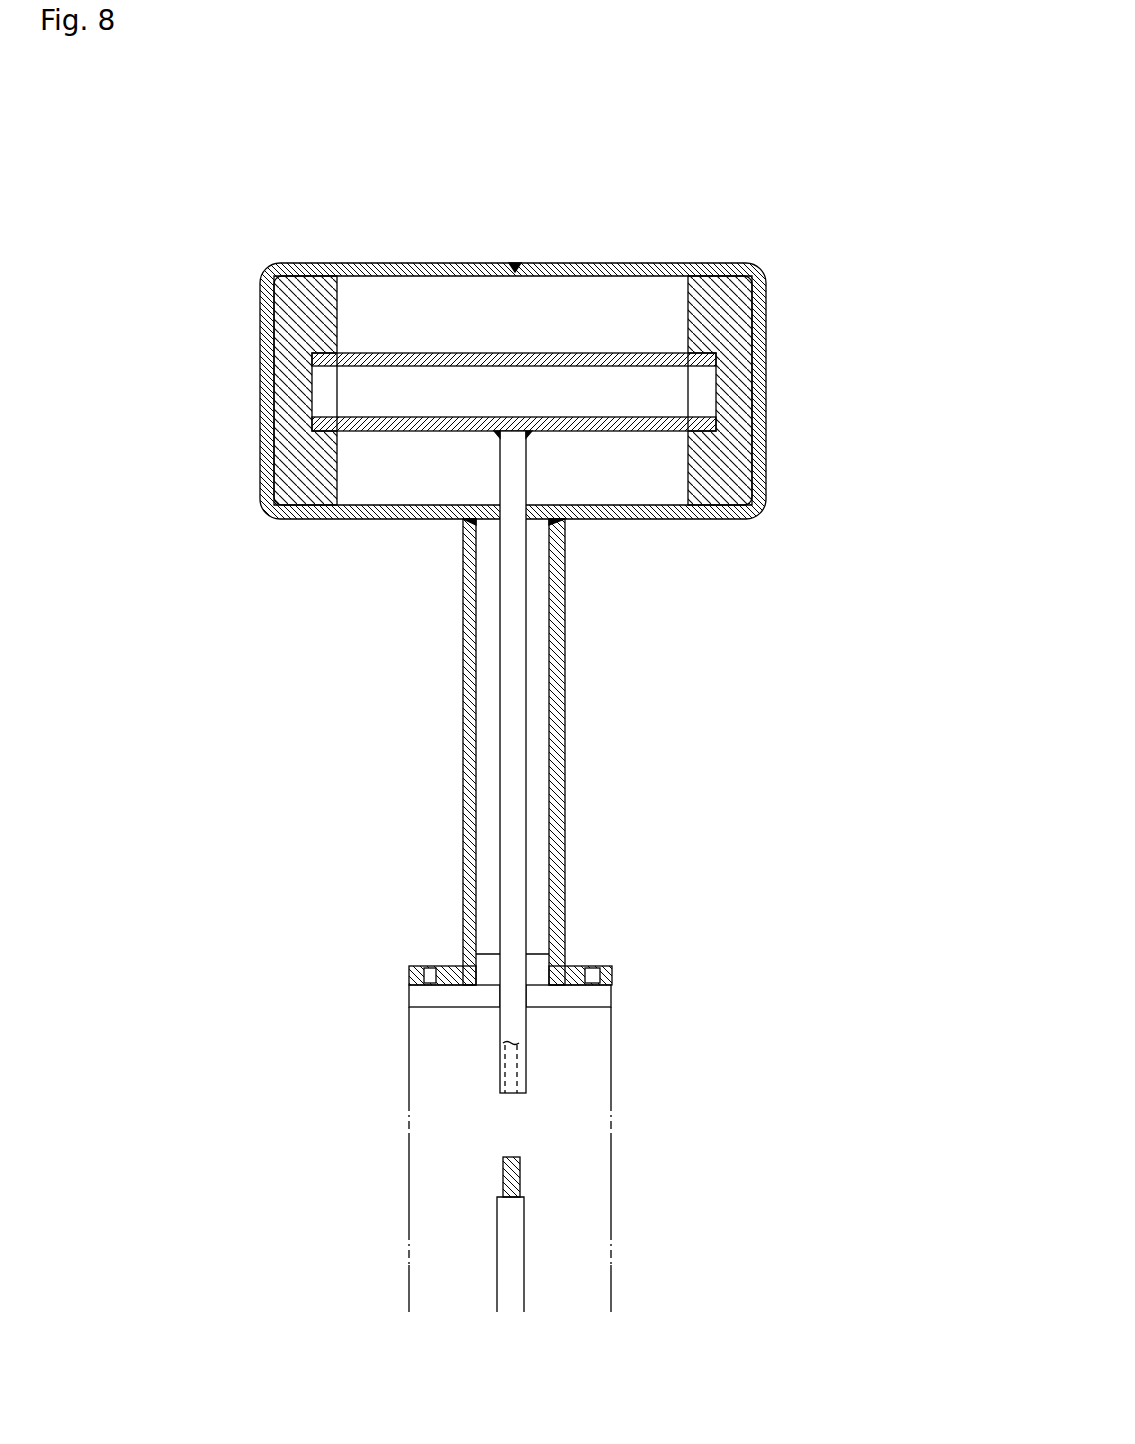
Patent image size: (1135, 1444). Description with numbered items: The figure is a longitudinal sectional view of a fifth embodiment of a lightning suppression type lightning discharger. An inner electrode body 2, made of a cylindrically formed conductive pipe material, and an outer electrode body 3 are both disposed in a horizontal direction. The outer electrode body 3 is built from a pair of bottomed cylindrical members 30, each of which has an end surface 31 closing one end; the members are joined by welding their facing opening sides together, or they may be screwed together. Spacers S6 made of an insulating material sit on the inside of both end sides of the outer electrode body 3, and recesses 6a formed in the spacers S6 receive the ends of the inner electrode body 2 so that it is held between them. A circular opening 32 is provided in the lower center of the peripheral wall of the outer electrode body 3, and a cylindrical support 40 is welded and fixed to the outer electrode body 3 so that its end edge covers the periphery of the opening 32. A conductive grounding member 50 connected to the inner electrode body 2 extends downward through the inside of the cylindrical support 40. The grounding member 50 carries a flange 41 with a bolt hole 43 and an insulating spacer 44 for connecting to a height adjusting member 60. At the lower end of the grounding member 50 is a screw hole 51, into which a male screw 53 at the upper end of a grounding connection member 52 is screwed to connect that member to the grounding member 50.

The inner electrode body 2 is at (373, 352).
The outer electrode body 3 is at (600, 135).
The bottomed cylindrical member 30 is at (487, 263).
The end surface 31 is at (262, 393).
The circular opening 32 is at (540, 507).
The cylindrical support 40 is at (568, 698).
The flange 41 is at (577, 967).
The bolt hole 43 is at (425, 967).
The insulating spacer 44 is at (603, 995).
The conductive grounding member 50 is at (513, 687).
The screw hole 51 is at (510, 1104).
The grounding connection member 52 is at (497, 1245).
The male screw 53 is at (503, 1167).
The height adjusting member 60 is at (612, 1163).
The recess 6a is at (320, 412).
The spacer S6 is at (262, 330).